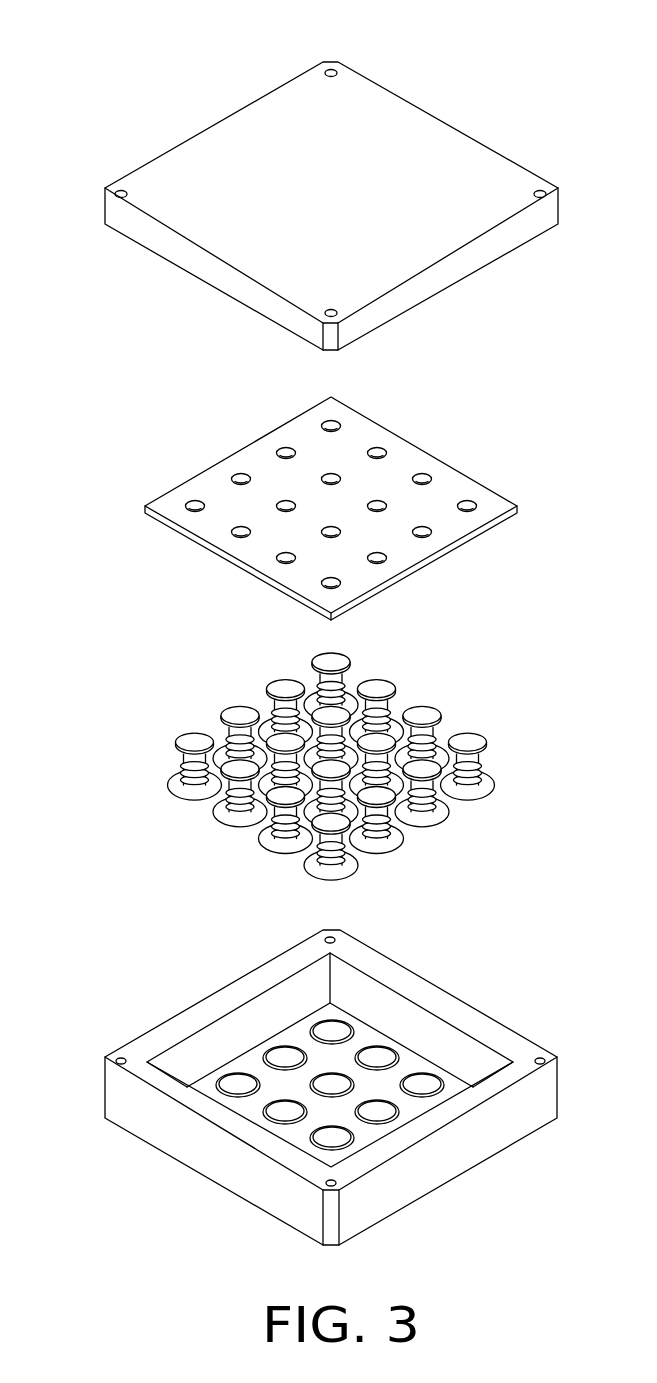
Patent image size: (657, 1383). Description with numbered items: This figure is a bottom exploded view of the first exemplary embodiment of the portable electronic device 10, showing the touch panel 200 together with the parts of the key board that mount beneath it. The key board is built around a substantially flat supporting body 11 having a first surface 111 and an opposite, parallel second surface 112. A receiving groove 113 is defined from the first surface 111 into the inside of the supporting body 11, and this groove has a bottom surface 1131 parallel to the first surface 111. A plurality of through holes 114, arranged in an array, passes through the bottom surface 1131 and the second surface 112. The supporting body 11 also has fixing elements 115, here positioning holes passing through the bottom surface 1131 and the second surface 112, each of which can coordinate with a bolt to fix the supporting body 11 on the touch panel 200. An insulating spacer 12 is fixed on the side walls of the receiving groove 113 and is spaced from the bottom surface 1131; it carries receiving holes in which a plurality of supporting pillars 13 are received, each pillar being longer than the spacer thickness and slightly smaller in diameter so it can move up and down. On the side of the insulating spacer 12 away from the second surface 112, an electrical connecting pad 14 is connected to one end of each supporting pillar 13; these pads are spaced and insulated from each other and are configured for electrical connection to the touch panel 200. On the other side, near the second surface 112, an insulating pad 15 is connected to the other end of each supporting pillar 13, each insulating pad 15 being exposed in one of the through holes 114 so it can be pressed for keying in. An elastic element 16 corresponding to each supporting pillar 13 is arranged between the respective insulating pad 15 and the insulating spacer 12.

The portable electronic device 10 is at (147, 47).
The touch panel 200 is at (457, 150).
The insulating spacer 12 is at (445, 482).
The supporting pillars 13 is at (371, 766).
The electrical connecting pads 14 is at (461, 699).
The insulating pads 15 is at (505, 798).
The elastic elements 16 is at (514, 770).
The supporting body 11 is at (310, 1090).
The first surface 111 is at (468, 1017).
The second surface 112 is at (462, 1180).
The receiving groove 113 is at (242, 1022).
The bottom surface 1131 is at (247, 1107).
The through holes 114 is at (327, 1140).
The fixing elements 115 is at (118, 1058).